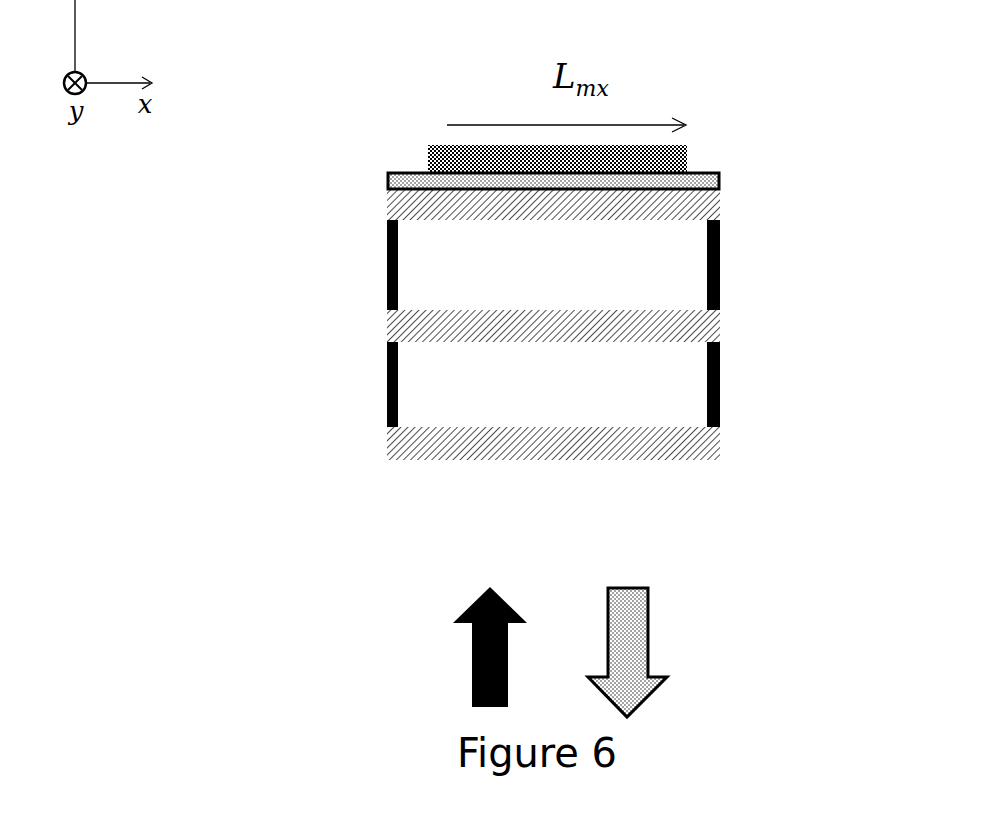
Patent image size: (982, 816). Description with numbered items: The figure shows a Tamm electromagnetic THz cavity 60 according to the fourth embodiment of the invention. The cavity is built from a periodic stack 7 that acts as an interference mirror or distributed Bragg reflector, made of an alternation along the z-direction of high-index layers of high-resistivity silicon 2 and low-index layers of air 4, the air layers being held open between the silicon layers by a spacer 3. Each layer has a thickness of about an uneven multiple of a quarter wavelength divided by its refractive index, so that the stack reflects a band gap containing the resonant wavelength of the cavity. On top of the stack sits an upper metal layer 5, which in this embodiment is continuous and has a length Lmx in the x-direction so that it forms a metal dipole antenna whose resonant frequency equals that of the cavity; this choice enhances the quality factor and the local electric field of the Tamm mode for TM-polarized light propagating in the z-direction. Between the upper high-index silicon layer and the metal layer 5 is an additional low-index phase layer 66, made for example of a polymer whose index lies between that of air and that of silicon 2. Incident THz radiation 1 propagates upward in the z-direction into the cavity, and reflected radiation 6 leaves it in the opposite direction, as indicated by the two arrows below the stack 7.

The incident THz radiation 1 is at (472, 647).
The high-resistivity silicon layer 2 is at (386, 448).
The spacer 3 is at (386, 387).
The air layer 4 is at (692, 282).
The upper metal layer 5 is at (708, 155).
The reflected radiation 6 is at (648, 670).
The periodic stack 7 is at (768, 192).
The electromagnetic THz cavity 60 is at (330, 360).
The low-index phase layer 66 is at (383, 173).